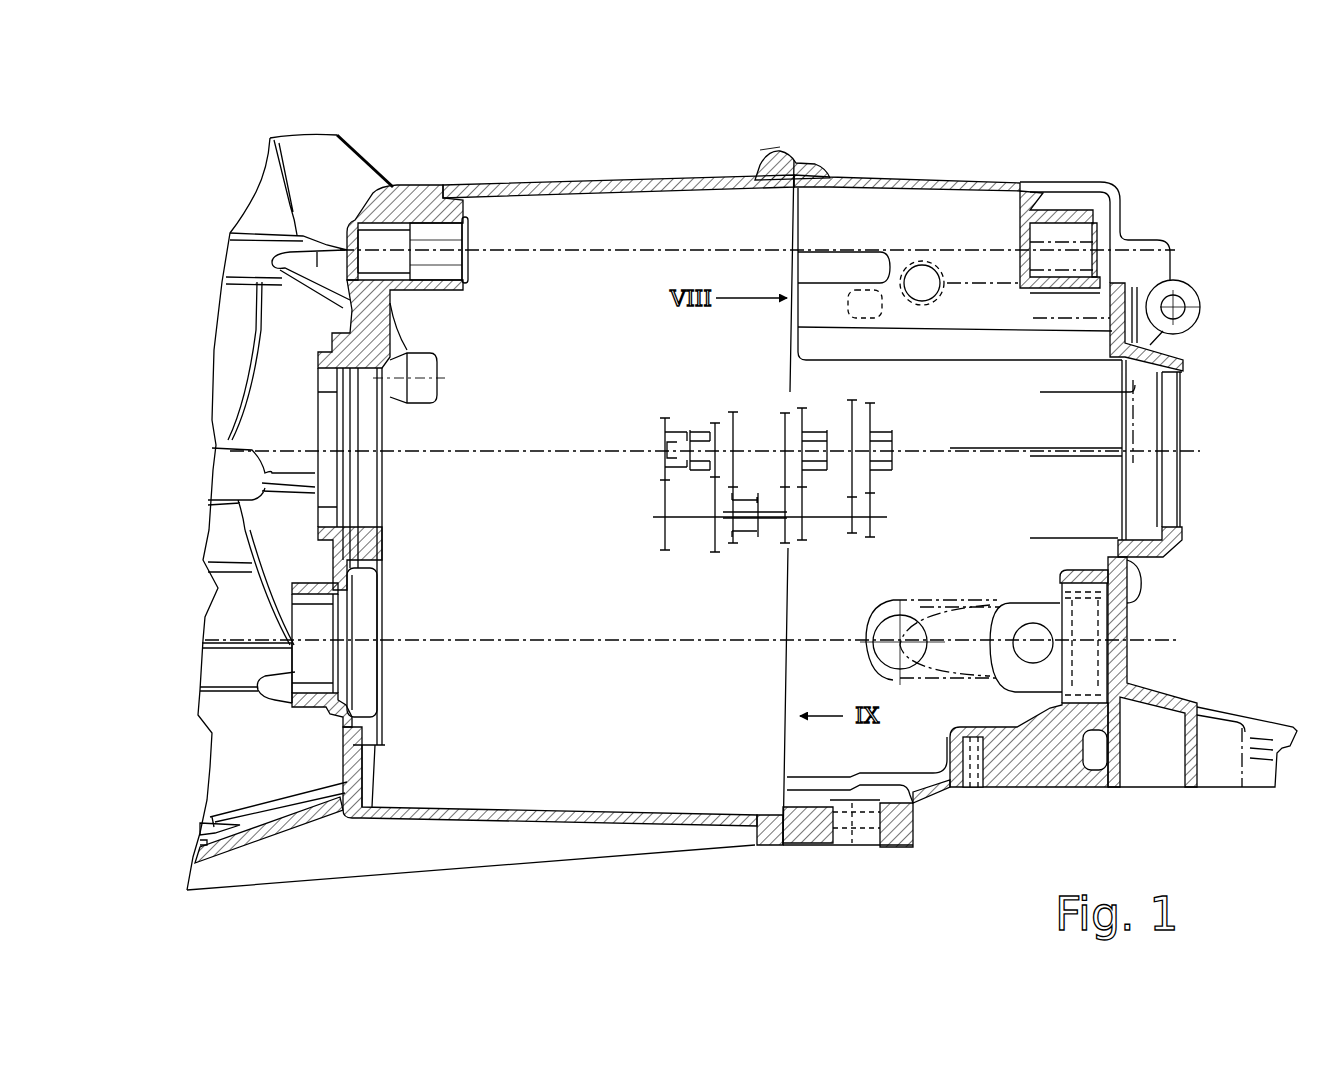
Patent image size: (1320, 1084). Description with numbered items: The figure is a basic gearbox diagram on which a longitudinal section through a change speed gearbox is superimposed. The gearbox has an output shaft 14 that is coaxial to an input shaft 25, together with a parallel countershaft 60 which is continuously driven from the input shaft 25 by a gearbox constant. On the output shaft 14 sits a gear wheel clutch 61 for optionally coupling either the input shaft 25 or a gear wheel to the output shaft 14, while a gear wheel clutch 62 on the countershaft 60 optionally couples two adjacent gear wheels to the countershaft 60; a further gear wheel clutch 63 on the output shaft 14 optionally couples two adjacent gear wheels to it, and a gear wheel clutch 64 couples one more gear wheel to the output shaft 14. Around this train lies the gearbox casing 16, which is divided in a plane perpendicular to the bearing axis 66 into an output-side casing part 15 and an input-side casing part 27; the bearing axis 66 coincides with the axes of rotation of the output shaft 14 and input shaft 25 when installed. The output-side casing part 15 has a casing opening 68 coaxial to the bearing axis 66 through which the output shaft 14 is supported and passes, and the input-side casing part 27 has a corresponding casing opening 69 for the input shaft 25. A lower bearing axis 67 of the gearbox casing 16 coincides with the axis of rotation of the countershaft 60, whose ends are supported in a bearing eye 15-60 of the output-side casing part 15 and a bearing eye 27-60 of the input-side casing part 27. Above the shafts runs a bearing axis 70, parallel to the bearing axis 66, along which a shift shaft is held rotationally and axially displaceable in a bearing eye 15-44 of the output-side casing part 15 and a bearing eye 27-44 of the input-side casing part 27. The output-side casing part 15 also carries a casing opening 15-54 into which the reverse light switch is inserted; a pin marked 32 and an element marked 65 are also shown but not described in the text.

The output shaft 14 is at (741, 445).
The output-side casing part 15 is at (1130, 621).
The bearing eye 15-44 is at (1037, 228).
The casing opening 15-54 is at (903, 291).
The bearing eye 15-60 is at (1066, 586).
The gearbox casing 16 is at (766, 846).
The input shaft 25 is at (657, 458).
The input-side casing part 27 is at (422, 820).
The bearing eye 27-44 is at (430, 237).
The bearing eye 27-60 is at (356, 697).
The locating pin 32 is at (418, 351).
The countershaft 60 is at (838, 522).
The gear wheel clutch 61 is at (690, 478).
The gear wheel clutch 62 is at (755, 492).
The gear wheel clutch 63 is at (827, 478).
The gear wheel clutch 64 is at (891, 480).
The shaft bearing 65 is at (662, 558).
The bearing axis 66 is at (280, 440).
The lower bearing axis 67 is at (305, 642).
The casing opening 68 is at (1172, 390).
The casing opening 69 is at (336, 490).
The bearing axis 70 is at (350, 226).